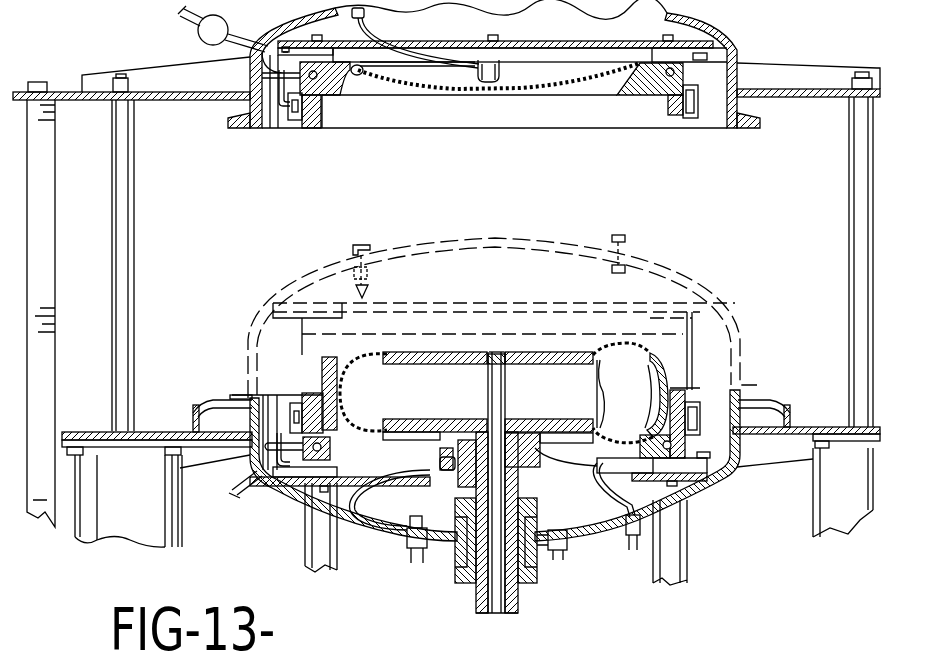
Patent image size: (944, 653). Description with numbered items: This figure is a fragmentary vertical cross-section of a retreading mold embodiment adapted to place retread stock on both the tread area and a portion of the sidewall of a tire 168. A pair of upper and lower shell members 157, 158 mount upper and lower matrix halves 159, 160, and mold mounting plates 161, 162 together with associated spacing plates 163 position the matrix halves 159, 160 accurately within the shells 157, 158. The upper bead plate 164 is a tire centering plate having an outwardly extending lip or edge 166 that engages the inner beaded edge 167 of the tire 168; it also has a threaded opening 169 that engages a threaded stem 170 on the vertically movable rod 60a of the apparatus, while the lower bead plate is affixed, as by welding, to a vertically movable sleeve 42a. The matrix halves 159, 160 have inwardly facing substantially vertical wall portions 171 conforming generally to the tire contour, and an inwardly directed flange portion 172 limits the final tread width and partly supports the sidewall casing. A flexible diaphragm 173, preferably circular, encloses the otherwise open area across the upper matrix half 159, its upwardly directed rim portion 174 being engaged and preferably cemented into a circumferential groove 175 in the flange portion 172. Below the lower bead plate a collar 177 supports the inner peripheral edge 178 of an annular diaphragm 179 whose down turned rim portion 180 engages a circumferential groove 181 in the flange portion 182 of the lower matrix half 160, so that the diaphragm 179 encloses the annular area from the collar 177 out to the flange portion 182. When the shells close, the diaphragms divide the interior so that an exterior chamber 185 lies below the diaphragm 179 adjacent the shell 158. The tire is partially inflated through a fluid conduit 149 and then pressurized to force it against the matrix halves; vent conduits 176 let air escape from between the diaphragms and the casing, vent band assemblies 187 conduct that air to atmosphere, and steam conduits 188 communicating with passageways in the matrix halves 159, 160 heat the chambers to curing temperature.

The upper shell member 157 is at (706, 29).
The lower shell member 158 is at (697, 511).
The upper matrix half 159 is at (685, 128).
The lower matrix half 160 is at (687, 392).
The mold mounting plate 161 is at (642, 40).
The mold mounting plate 162 is at (713, 488).
The spacing plate 163 is at (512, 53).
The upper bead plate 164 is at (470, 366).
The outwardly extending lip 166 is at (612, 368).
The beaded edge of tire 167 is at (614, 325).
The tire 168 is at (666, 360).
The threaded opening 169 is at (501, 352).
The threaded stem 170 is at (493, 352).
The vertical wall portion 171 is at (667, 103).
The flange portion 172 is at (645, 80).
The flexible diaphragm 173 is at (420, 89).
The upwardly directed rim portion 174 is at (346, 90).
The circumferential groove 175 is at (359, 77).
The vent conduit 176 is at (367, 16).
The collar 177 is at (527, 445).
The inner peripheral edge 178 is at (536, 481).
The annular diaphragm 179 is at (424, 476).
The down turned rim portion 180 is at (378, 486).
The circumferential groove 181 is at (650, 438).
The flange portion 182 is at (644, 457).
The exterior chamber 185 is at (452, 530).
The vent band assembly 187 is at (291, 134).
The steam conduit 188 is at (212, 81).
The fluid conduit 149 is at (368, 518).
The vertically movable sleeve 42a is at (518, 603).
The vertically movable rod 60a is at (501, 380).